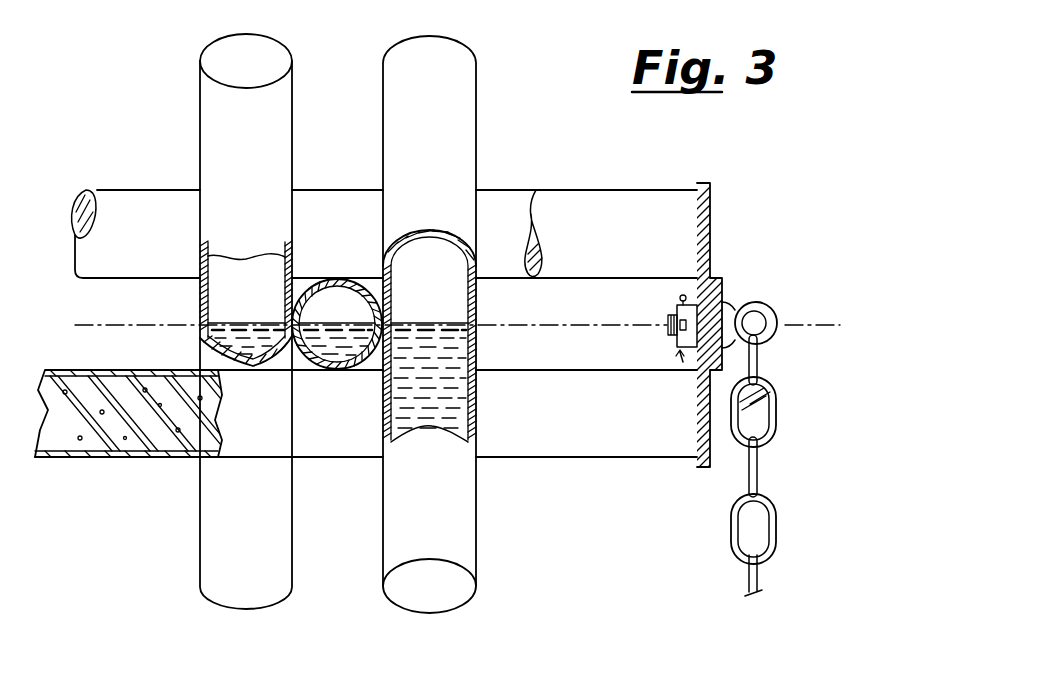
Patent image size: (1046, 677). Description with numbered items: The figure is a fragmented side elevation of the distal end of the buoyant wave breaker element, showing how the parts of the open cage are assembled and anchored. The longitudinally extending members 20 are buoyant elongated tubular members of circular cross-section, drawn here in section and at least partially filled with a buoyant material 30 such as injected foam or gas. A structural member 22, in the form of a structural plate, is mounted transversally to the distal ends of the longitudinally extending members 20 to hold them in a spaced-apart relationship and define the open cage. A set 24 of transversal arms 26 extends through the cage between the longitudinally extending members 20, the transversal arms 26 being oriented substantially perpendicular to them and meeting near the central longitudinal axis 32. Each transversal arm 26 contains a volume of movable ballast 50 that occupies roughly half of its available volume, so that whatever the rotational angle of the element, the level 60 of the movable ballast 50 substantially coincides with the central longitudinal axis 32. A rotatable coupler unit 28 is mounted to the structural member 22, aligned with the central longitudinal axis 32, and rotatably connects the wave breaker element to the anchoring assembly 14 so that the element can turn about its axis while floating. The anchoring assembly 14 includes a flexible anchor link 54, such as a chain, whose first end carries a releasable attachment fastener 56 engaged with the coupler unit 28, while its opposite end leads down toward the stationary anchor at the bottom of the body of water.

The anchoring assembly 14 is at (798, 465).
The longitudinally extending members 20 is at (645, 253).
The structural members 22 is at (707, 183).
The sets of transversal arms 24 is at (246, 321).
The transversal arms 26 is at (447, 83).
The rotatable coupler units 28 is at (780, 316).
The buoyant material 30 is at (120, 460).
The central longitudinal axis 32 is at (837, 321).
The movable ballast 50 is at (452, 356).
The flexible anchor link 54 is at (783, 528).
The releasable attachment fasteners 56 is at (762, 360).
The level of movable ballast 60 is at (418, 323).